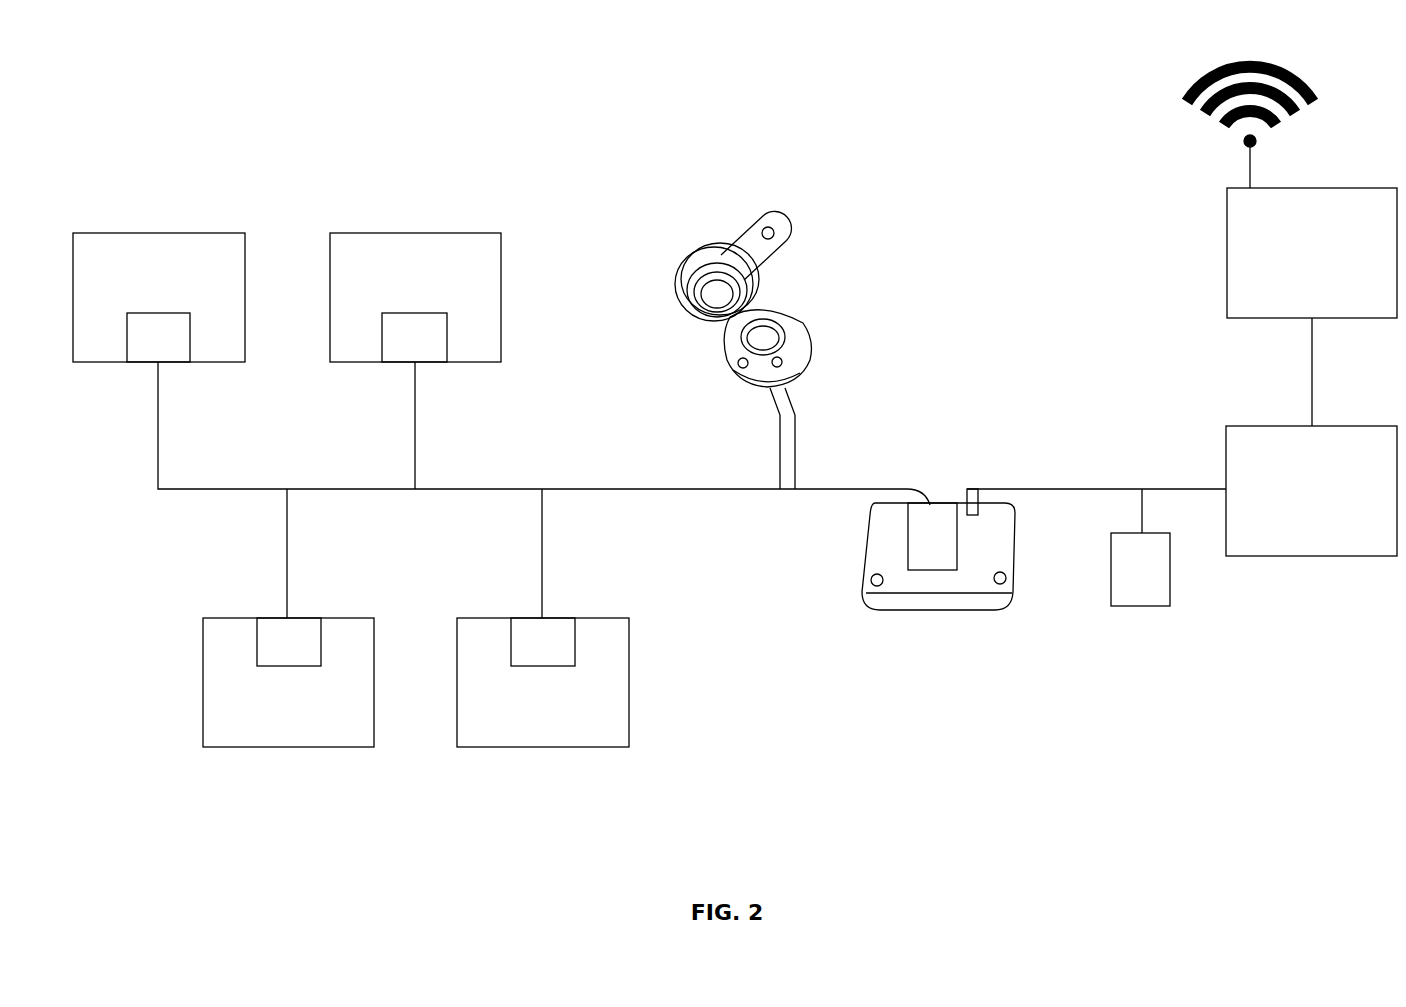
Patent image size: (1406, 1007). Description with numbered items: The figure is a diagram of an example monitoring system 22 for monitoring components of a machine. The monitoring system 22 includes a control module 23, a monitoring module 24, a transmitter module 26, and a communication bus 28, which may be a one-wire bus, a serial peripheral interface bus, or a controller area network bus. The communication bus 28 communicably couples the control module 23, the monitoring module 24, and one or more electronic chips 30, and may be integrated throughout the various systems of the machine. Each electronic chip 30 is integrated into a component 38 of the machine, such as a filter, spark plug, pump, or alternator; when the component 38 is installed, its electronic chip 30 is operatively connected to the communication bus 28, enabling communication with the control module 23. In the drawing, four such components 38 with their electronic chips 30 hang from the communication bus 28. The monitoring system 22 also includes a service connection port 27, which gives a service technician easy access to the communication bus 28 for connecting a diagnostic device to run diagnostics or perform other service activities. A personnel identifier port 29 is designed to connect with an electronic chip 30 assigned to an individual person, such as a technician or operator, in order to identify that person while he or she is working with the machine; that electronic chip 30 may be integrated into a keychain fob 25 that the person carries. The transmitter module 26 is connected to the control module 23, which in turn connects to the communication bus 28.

The monitoring system 22 is at (1004, 112).
The control module 23 is at (1311, 437).
The monitoring module 24 is at (930, 612).
The keychain fob 25 is at (781, 182).
The transmitter module 26 is at (1292, 192).
The service connection port 27 is at (1140, 569).
The communication bus 28 is at (204, 491).
The personnel identifier port 29 is at (813, 342).
The electronic chip 30 is at (712, 288).
The component 38 is at (351, 490).